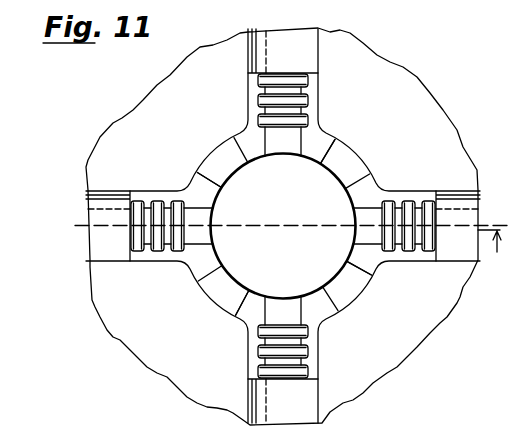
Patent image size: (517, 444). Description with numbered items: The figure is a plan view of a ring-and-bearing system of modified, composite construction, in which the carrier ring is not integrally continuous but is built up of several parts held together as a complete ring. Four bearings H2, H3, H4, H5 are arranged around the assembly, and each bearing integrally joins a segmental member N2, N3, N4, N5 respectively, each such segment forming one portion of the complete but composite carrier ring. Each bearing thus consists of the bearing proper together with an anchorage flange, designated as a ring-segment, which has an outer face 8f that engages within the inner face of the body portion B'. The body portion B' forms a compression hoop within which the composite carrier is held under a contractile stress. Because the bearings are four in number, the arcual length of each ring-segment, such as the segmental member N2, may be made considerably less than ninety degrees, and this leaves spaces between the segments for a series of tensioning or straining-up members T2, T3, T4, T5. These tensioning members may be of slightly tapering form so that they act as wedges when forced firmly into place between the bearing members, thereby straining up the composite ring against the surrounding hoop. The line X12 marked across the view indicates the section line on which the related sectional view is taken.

The bearing H2 is at (152, 199).
The bearing H3 is at (314, 101).
The bearing H4 is at (427, 197).
The bearing H5 is at (318, 353).
The outer face 8f is at (327, 133).
The body portion B' is at (282, 226).
The tensioning member T2 is at (231, 171).
The tensioning member T3 is at (343, 183).
The tensioning member T4 is at (334, 288).
The tensioning member T5 is at (237, 290).
The segmental member N2 is at (213, 199).
The segmental member N3 is at (311, 146).
The segmental member N4 is at (352, 262).
The segmental member N5 is at (261, 298).
The section line X12 is at (283, 224).